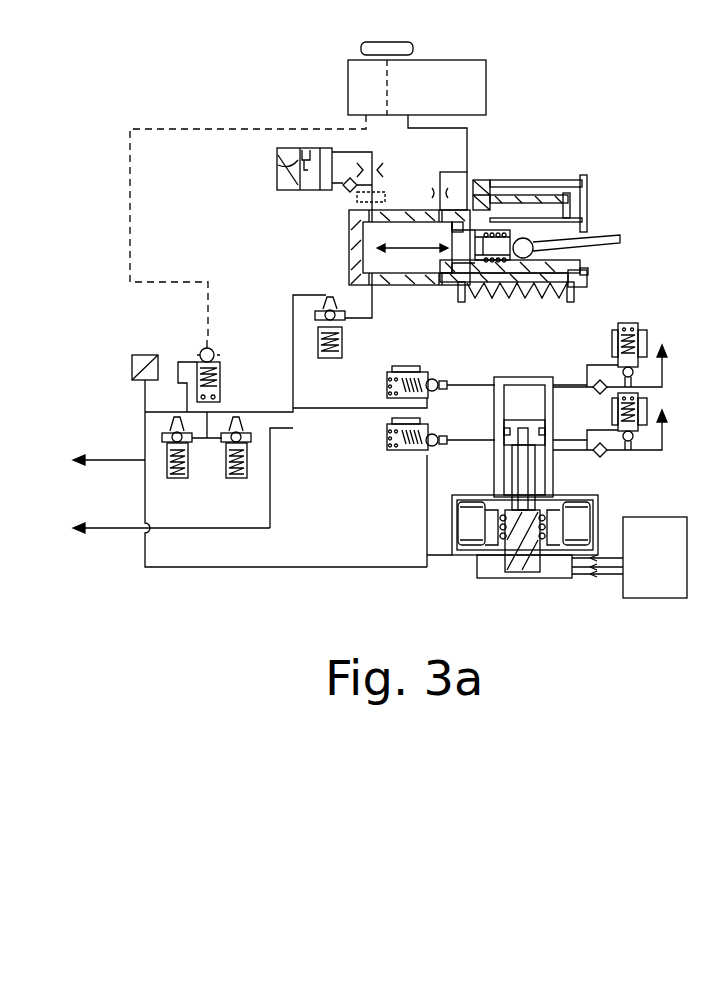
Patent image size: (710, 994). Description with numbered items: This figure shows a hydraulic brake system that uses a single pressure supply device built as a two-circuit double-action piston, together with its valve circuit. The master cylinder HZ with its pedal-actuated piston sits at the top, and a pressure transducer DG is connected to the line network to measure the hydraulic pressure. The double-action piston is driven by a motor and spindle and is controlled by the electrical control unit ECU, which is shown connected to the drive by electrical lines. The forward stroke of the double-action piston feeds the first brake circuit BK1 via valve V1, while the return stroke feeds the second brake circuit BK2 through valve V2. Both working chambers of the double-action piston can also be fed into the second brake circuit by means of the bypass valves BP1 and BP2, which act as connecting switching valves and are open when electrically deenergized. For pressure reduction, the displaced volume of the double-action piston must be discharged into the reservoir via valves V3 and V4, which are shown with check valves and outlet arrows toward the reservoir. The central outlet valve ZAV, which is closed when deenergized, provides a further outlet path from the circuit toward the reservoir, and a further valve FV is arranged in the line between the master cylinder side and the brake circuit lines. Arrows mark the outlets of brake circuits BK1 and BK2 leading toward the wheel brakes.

The master cylinder HZ is at (497, 200).
The pressure transducer DG is at (140, 357).
The central outlet valve ZAV is at (220, 360).
The release valve FV is at (345, 345).
The brake circuit 1 BK1 is at (118, 532).
The brake circuit 2 BK2 is at (103, 446).
The bypass valve 1 BP1 is at (243, 464).
The bypass valve 2 BP2 is at (185, 461).
The valve of the double-action piston V1 is at (394, 380).
The valve of the double-action piston V2 is at (436, 454).
The valve of the double-action piston V3 is at (620, 352).
The valve of the double-action piston V4 is at (620, 441).
The electrical control unit ECU is at (629, 557).